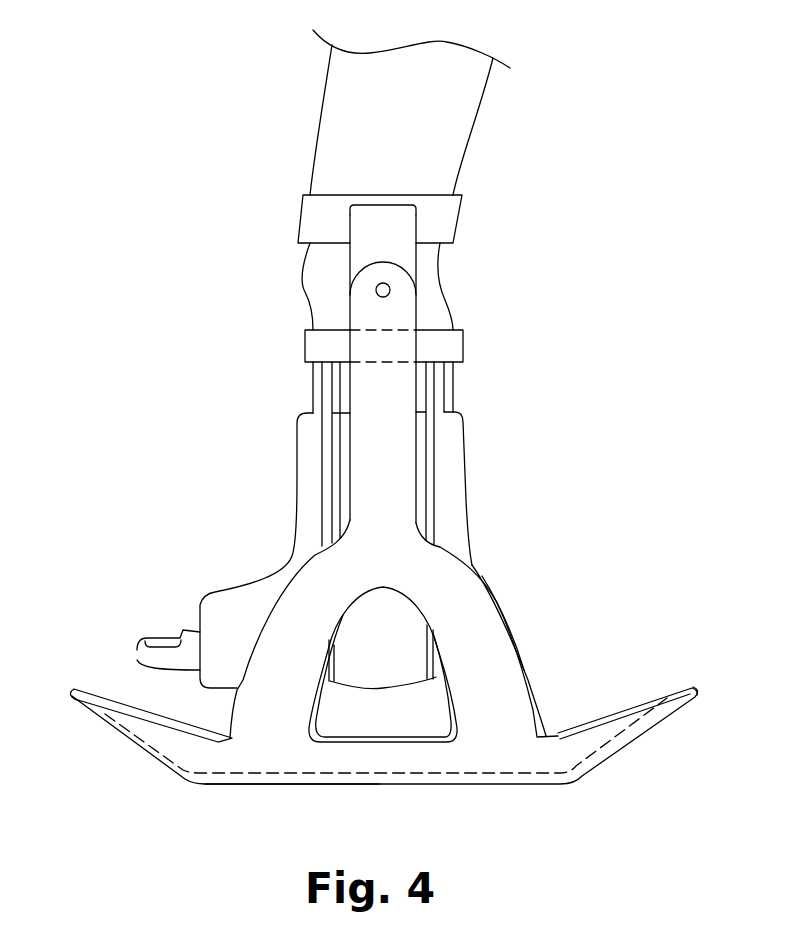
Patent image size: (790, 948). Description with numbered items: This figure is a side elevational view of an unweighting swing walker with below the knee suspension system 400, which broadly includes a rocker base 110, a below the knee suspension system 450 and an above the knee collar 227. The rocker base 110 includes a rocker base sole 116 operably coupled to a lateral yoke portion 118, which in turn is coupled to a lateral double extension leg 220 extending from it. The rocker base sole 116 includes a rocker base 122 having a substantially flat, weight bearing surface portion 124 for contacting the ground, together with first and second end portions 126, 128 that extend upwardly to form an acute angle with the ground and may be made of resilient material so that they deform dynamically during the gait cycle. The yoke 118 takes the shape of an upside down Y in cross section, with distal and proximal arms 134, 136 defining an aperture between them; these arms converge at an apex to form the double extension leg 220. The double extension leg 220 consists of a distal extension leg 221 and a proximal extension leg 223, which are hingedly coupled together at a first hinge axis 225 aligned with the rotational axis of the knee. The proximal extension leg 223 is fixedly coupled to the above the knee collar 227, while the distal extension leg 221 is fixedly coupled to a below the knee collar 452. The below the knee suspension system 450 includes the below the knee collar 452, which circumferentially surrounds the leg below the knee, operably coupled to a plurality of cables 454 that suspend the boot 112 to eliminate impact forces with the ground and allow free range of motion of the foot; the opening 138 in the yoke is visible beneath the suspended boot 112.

The rocker base 110 is at (367, 526).
The boot 112 is at (227, 607).
The rocker base sole 116 is at (507, 784).
The lateral yoke portion 118 is at (498, 603).
The rocker base 122 is at (427, 775).
The weight bearing surface portion 124 is at (294, 786).
The first end portion 126 is at (105, 732).
The second end portion 128 is at (652, 730).
The distal arm 134 is at (257, 710).
The proximal arm 136 is at (500, 638).
The heel opening 138 is at (380, 697).
The double extension leg 220 is at (417, 386).
The distal extension leg 221 is at (388, 483).
The proximal extension leg 223 is at (393, 218).
The first hinge axis 225 is at (390, 292).
The above the knee collar 227 is at (447, 217).
The unweighting swing walker with below the knee suspension system 400 is at (428, 438).
The below the knee suspension system 450 is at (306, 348).
The below the knee collar 452 is at (453, 347).
The cables 454 is at (313, 393).